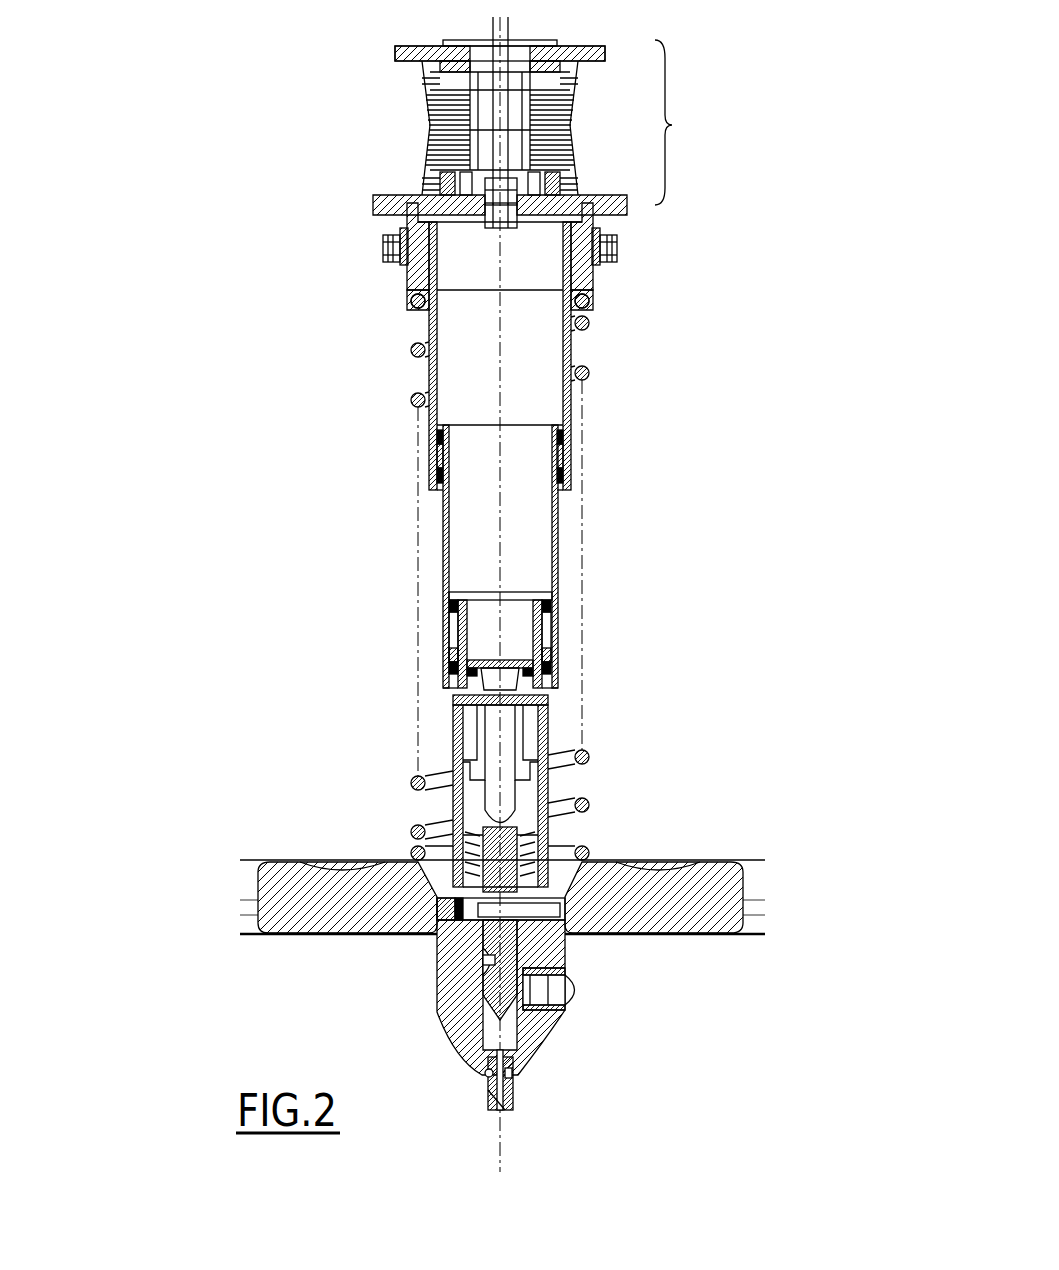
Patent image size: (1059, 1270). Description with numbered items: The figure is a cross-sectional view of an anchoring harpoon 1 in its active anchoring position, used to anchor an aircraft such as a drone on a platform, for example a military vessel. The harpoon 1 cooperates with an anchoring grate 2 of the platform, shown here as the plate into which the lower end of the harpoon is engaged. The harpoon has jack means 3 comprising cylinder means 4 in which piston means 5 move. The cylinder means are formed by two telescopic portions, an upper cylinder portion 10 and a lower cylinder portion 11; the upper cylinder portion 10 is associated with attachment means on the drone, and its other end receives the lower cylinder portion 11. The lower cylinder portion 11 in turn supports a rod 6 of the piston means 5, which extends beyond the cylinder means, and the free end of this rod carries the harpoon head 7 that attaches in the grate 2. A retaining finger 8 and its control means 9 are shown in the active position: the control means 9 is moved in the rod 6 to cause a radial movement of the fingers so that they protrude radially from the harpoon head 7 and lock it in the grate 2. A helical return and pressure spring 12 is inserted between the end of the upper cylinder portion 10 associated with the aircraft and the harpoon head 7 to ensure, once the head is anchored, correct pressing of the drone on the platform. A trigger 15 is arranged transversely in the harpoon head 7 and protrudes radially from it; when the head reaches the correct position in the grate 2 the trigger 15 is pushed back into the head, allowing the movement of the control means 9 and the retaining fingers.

The anchoring harpoon 1 is at (258, 342).
The anchoring grate 2 is at (351, 938).
The jack means 3 is at (397, 578).
The cylinder means 4 is at (425, 465).
The piston means 5 is at (523, 597).
The rod 6 is at (449, 722).
The harpoon head 7 is at (453, 1062).
The finger 8 is at (590, 993).
The control means 9 is at (460, 934).
The upper cylinder portion 10 is at (585, 353).
The lower cylinder portion 11 is at (566, 528).
The helical return and pressure spring 12 is at (601, 332).
The trigger 15 is at (541, 900).